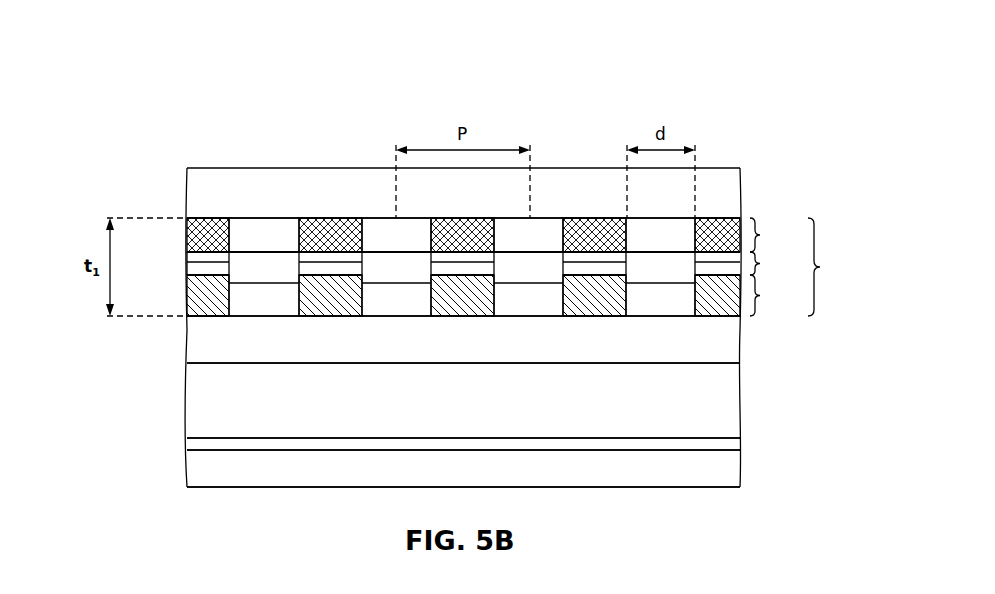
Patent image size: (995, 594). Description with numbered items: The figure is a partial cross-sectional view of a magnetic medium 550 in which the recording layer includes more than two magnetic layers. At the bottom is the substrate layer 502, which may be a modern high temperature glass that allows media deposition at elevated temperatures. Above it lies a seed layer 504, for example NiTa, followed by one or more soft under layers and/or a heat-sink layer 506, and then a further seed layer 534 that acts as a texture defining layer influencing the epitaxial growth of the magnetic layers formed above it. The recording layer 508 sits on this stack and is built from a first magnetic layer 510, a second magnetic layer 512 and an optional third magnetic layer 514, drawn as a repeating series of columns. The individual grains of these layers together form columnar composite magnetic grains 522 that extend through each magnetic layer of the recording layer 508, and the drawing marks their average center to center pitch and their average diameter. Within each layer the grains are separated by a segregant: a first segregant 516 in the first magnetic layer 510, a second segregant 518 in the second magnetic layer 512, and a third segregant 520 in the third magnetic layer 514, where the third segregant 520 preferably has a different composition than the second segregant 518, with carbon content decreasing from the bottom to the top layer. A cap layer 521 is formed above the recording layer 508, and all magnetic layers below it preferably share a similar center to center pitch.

The magnetic medium 550 is at (725, 104).
The composite magnetic grains 522 is at (654, 204).
The cap layer 521 is at (463, 201).
The third segregant 520 is at (187, 240).
The second segregant 518 is at (187, 270).
The first segregant 516 is at (187, 303).
The third magnetic layer 514 is at (491, 235).
The second magnetic layer 512 is at (491, 263).
The first magnetic layer 510 is at (491, 295).
The recording layer 508 is at (522, 267).
The seed layer 534 is at (463, 339).
The heat-sink layer 506 is at (463, 400).
The seed layer 504 is at (742, 445).
The substrate layer 502 is at (463, 468).